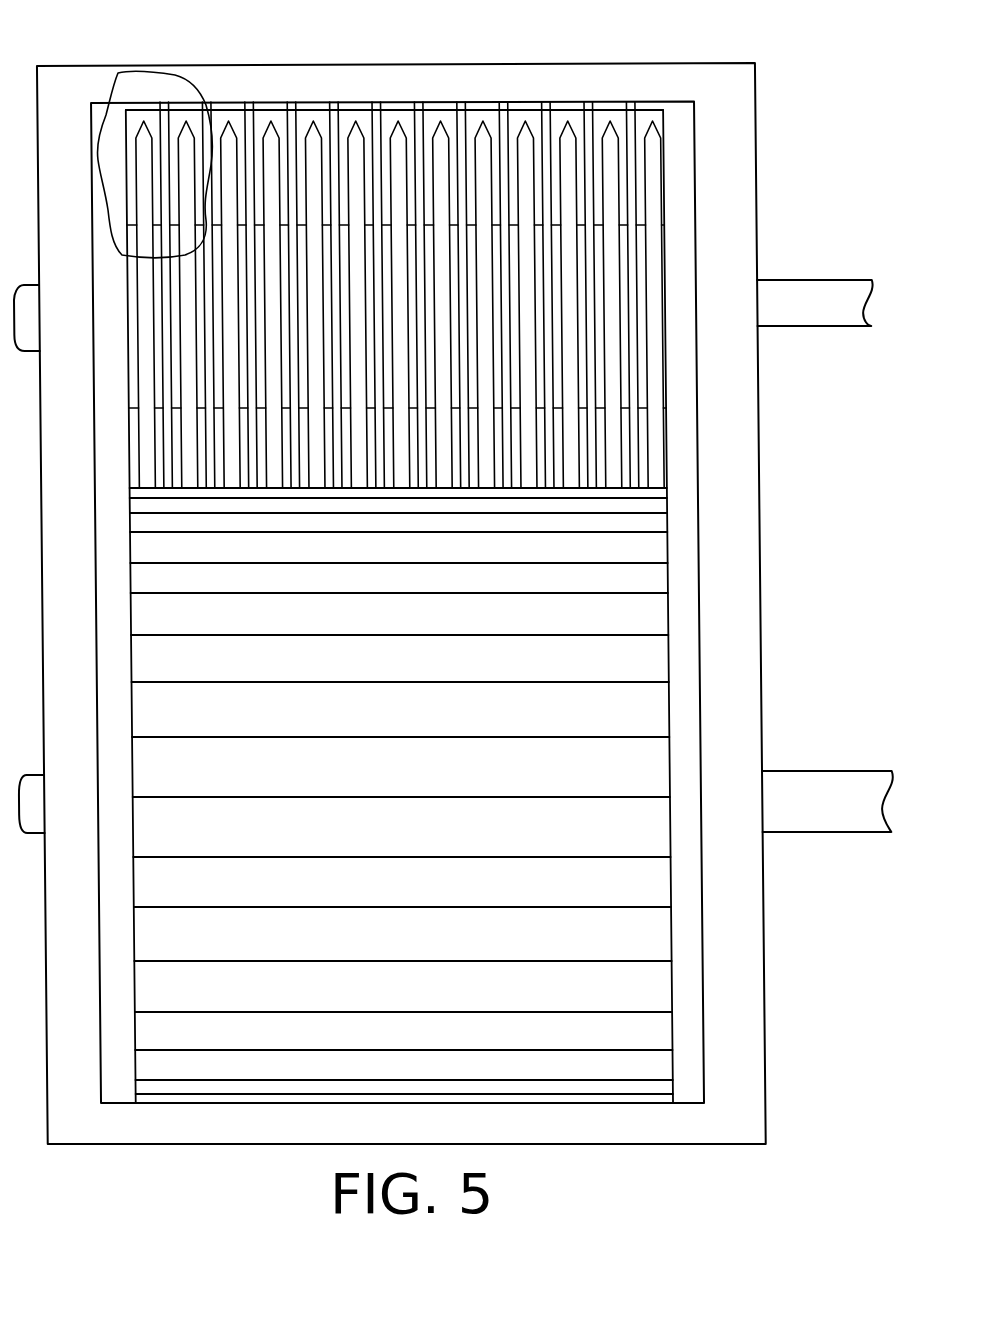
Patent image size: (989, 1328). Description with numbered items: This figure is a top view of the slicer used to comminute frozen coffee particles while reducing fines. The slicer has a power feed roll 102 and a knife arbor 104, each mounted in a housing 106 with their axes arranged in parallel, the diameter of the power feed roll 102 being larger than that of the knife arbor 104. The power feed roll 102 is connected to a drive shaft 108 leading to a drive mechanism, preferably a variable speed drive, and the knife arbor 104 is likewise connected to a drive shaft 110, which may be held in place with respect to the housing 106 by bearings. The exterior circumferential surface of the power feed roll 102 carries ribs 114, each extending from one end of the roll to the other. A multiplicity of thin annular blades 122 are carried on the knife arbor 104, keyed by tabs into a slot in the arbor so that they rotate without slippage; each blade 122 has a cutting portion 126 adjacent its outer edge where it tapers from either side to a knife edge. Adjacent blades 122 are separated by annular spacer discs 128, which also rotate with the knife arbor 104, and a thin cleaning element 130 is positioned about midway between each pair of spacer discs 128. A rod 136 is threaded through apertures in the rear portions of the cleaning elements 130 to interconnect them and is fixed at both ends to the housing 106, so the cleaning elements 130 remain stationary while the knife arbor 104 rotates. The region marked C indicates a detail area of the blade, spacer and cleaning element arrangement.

The power feed roll 102 is at (652, 880).
The knife arbor 104 is at (653, 302).
The housing 106 is at (733, 1072).
The drive shaft 108 is at (855, 786).
The drive shaft 110 is at (840, 300).
The ribs 114 is at (647, 633).
The annular blades 122 is at (652, 155).
The cutting portion 126 is at (568, 122).
The spacer discs 128 is at (643, 368).
The cleaning element 130 is at (288, 118).
The rod 136 is at (452, 108).
The detail region C is at (119, 71).